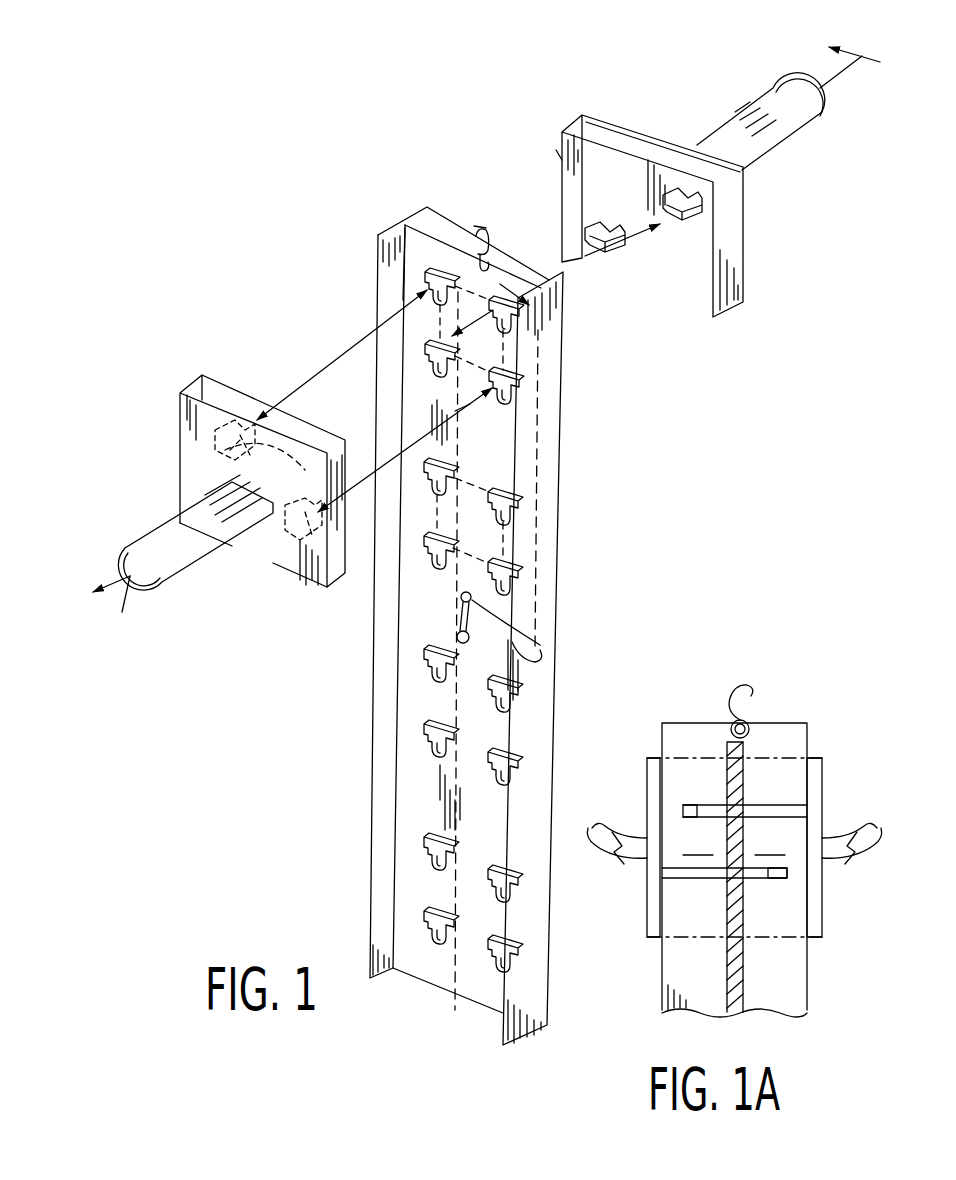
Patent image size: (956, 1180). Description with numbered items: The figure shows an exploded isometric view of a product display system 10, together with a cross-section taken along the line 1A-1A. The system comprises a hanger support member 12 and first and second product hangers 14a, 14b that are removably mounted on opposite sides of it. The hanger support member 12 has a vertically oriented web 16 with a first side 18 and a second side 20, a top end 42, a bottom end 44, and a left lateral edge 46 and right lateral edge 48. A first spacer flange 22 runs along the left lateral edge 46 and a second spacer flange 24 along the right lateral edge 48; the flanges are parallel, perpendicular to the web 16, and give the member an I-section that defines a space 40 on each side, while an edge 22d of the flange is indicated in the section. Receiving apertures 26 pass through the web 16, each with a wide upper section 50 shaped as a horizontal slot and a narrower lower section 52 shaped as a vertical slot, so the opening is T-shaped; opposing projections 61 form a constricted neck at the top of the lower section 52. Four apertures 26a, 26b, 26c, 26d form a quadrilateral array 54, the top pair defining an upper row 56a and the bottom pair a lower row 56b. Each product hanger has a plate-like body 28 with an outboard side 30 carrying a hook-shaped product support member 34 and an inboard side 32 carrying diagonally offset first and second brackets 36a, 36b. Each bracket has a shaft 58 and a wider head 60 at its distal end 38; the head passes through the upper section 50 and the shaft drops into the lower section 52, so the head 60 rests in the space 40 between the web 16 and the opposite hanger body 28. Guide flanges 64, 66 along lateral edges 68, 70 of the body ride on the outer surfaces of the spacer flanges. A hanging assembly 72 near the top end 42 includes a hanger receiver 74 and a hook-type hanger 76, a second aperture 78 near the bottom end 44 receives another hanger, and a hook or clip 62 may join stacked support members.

In FIG. 1, the product display system 10 is at (312, 172).
In FIG. 1, the hanger support member 12 is at (542, 605).
In FIG. 1A, the hanger support member 12 is at (652, 1005).
In FIG. 1, the first product hanger 14a is at (178, 396).
In FIG. 1A, the first product hanger 14a is at (656, 1000).
In FIG. 1, the second product hanger 14b is at (744, 286).
In FIG. 1A, the second product hanger 14b is at (825, 908).
In FIG. 1, the web 16 is at (450, 228).
In FIG. 1A, the web 16 is at (737, 1014).
In FIG. 1, the first side 18 is at (413, 242).
In FIG. 1A, the first side 18 is at (720, 991).
In FIG. 1, the second side 20 is at (463, 222).
In FIG. 1A, the second side 20 is at (748, 991).
In FIG. 1, the first spacer flange 22 is at (400, 222).
In FIG. 1A, the first spacer flange 22 is at (800, 981).
In FIG. 1A, the edge of side wall 22d is at (807, 921).
In FIG. 1, the second spacer flange 24 is at (534, 307).
In FIG. 1, the receiving aperture 26 is at (460, 552).
In FIG. 1, the receiving aperture 26a is at (423, 286).
In FIG. 1A, the receiving aperture 26a is at (801, 742).
In FIG. 1, the receiving aperture 26b is at (508, 318).
In FIG. 1, the receiving aperture 26c is at (520, 384).
In FIG. 1, the receiving aperture 26d is at (425, 352).
In FIG. 1, the body 28 is at (698, 258).
In FIG. 1A, the body 28 is at (650, 757).
In FIG. 1, the outboard side 30 is at (655, 150).
In FIG. 1A, the outboard side 30 is at (647, 772).
In FIG. 1, the inboard side 32 is at (630, 148).
In FIG. 1A, the inboard side 32 is at (678, 757).
In FIG. 1, the product support member 34 is at (789, 141).
In FIG. 1A, the product support member 34 is at (600, 850).
In FIG. 1, the first bracket 36a is at (698, 204).
In FIG. 1A, the first bracket 36a is at (797, 803).
In FIG. 1, the second bracket 36b is at (561, 226).
In FIG. 1A, the second bracket 36b is at (666, 877).
In FIG. 1, the distal end 38 is at (684, 222).
In FIG. 1A, the distal end 38 is at (683, 808).
In FIG. 1A, the space 40 is at (734, 840).
In FIG. 1, the top end 42 is at (392, 262).
In FIG. 1, the bottom end 44 is at (391, 641).
In FIG. 1, the left lateral edge 46 is at (397, 362).
In FIG. 1, the right lateral edge 48 is at (537, 420).
In FIG. 1, the upper section 50 is at (436, 549).
In FIG. 1, the lower section 52 is at (441, 550).
In FIG. 1, the quadrilateral array 54 is at (540, 361).
In FIG. 1, the upper row 56a is at (500, 284).
In FIG. 1, the lower row 56b is at (442, 408).
In FIG. 1, the shaft 58 is at (668, 218).
In FIG. 1A, the shaft 58 is at (760, 805).
In FIG. 1, the head 60 is at (600, 228).
In FIG. 1A, the head 60 is at (710, 805).
In FIG. 1, the projections 61 is at (376, 562).
In FIG. 1, the hook or clip 62 is at (391, 732).
In FIG. 1, the guide flange 64 is at (730, 233).
In FIG. 1A, the guide flange 64 is at (711, 740).
In FIG. 1, the guide flange 66 is at (558, 152).
In FIG. 1A, the guide flange 66 is at (809, 740).
In FIG. 1, the lateral edge 68 is at (212, 490).
In FIG. 1, the lateral edge 70 is at (323, 500).
In FIG. 1, the hanging assembly 72 is at (478, 224).
In FIG. 1, the hanger receiver 74 is at (494, 252).
In FIG. 1A, the hanger receiver 74 is at (750, 713).
In FIG. 1, the hanger 76 is at (489, 228).
In FIG. 1A, the hanger 76 is at (742, 688).
In FIG. 1, the second aperture 78 is at (478, 601).
In FIG. 1, the section line 1A is at (478, 322).